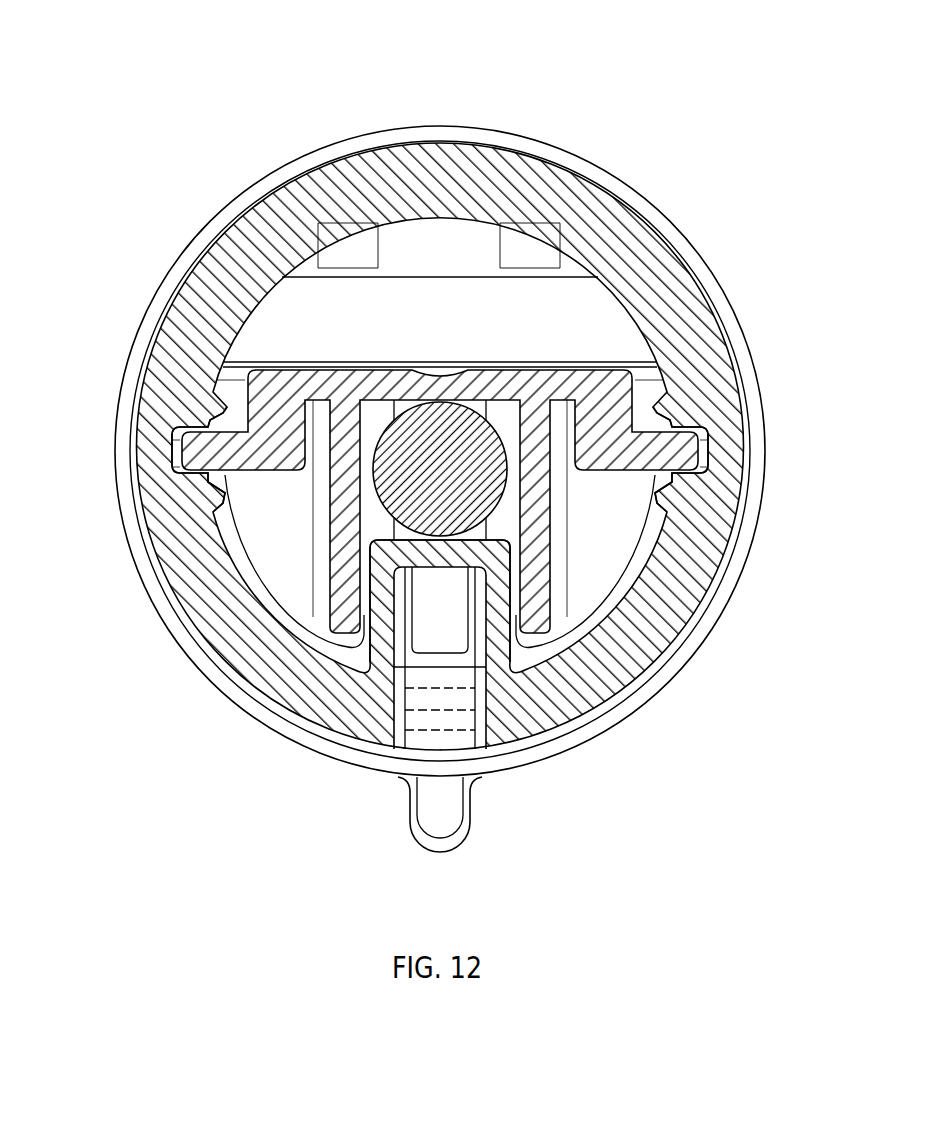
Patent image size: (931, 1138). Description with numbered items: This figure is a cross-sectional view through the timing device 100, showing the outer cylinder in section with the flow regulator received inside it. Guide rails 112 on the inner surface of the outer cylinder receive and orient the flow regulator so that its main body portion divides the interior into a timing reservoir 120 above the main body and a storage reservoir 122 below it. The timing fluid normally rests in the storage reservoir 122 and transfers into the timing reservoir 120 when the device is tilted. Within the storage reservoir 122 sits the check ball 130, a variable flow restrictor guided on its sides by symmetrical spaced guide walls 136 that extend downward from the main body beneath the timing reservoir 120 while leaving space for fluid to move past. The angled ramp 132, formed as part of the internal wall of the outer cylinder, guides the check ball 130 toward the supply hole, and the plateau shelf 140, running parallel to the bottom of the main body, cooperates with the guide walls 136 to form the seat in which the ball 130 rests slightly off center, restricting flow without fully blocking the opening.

The timing device 100 is at (188, 662).
The guide rails 112 is at (165, 410).
The timing reservoir 120 is at (507, 322).
The storage reservoir 122 is at (600, 532).
The check ball 130 is at (452, 448).
The angled ramp 132 is at (497, 620).
The guide walls 136 is at (343, 565).
The plateau shelf 140 is at (390, 537).